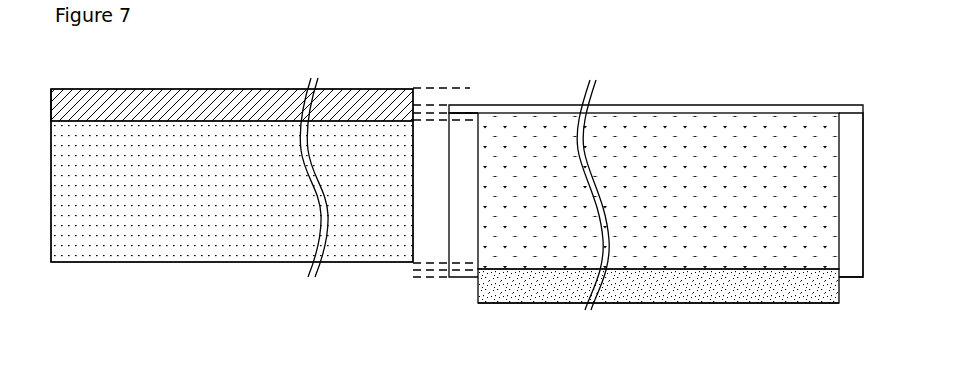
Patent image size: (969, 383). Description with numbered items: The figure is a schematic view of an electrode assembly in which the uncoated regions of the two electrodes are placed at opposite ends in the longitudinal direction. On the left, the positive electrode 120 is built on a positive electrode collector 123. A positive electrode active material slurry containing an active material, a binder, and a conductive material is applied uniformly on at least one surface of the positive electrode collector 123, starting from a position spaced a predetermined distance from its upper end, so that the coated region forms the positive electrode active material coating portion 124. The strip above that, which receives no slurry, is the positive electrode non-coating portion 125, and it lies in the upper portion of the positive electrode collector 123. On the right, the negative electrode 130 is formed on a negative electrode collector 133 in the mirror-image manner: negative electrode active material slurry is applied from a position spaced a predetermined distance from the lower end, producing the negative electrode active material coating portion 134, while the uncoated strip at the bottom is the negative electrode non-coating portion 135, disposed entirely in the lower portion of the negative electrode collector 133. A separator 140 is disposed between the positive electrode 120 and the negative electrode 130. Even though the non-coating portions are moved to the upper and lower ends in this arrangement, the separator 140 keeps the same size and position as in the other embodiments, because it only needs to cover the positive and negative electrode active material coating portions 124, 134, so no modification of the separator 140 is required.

The positive electrode 120 is at (98, 264).
The positive electrode collector 123 is at (51, 110).
The positive electrode active material coating portion 124 is at (242, 253).
The positive electrode non-coating portion 125 is at (222, 93).
The negative electrode 130 is at (815, 302).
The negative electrode collector 133 is at (705, 304).
The negative electrode active material coating portion 134 is at (502, 112).
The negative electrode non-coating portion 135 is at (644, 304).
The separator 140 is at (720, 105).